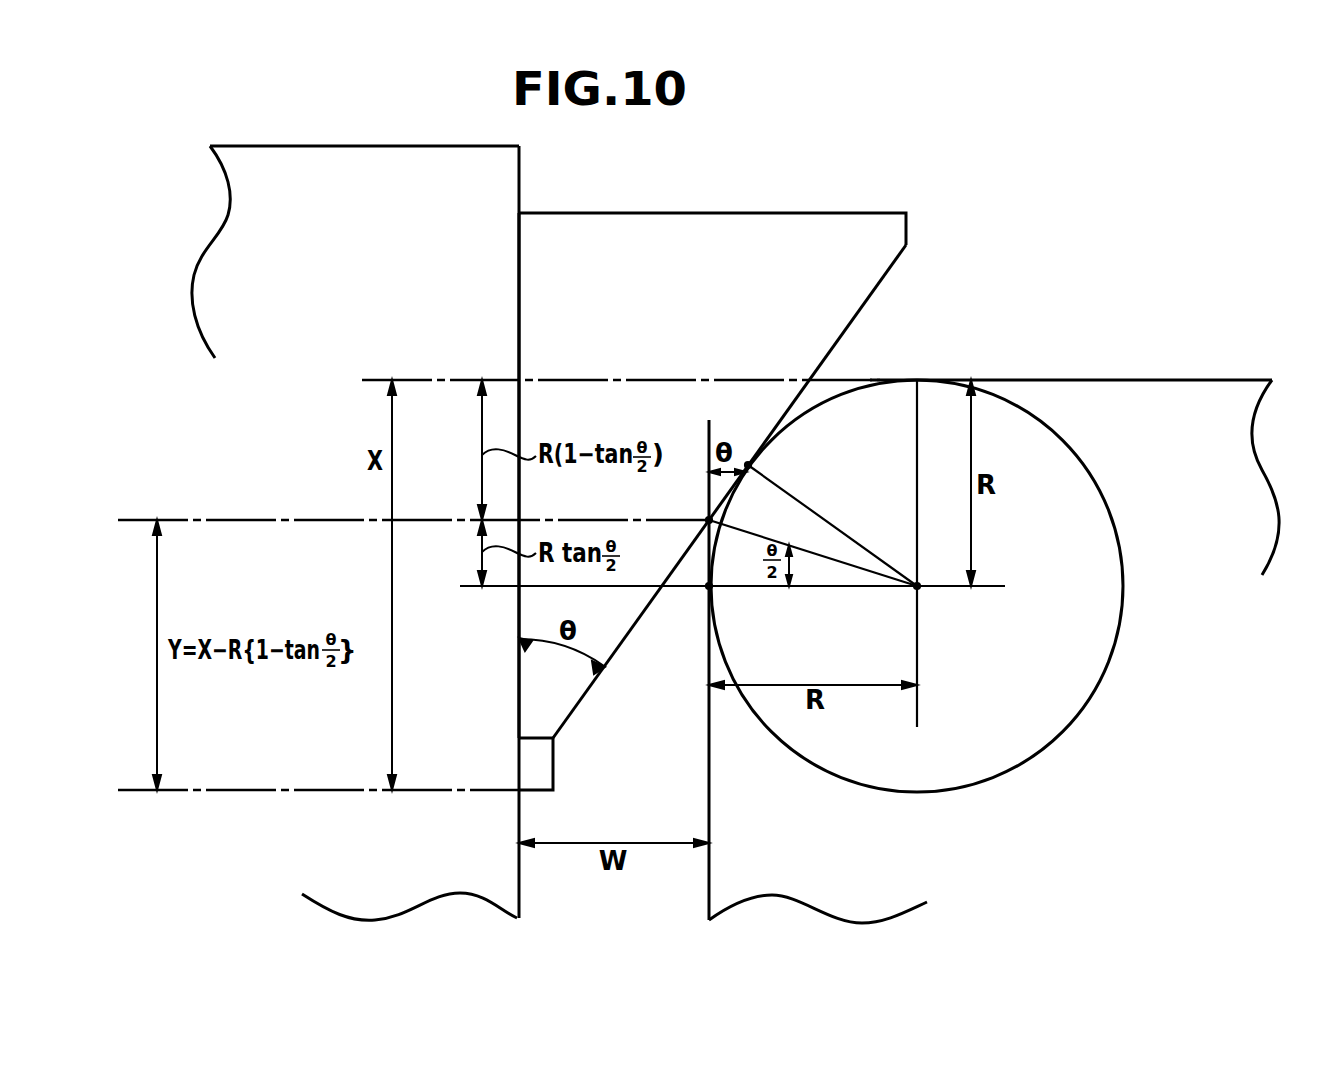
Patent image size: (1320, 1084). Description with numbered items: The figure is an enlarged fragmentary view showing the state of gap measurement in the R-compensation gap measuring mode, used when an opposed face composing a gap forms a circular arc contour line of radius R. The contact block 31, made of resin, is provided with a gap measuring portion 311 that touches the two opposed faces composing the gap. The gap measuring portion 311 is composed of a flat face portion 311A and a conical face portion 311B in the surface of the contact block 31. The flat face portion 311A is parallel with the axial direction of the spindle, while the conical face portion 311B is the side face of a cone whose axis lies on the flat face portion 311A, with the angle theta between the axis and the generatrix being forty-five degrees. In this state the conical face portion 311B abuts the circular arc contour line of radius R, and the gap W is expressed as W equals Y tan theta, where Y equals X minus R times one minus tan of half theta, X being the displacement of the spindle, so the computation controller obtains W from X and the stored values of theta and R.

The contact block 31 is at (692, 200).
The gap measuring portion 311 is at (819, 435).
The flat face portion 311A is at (520, 292).
The conical face portion 311B is at (846, 332).